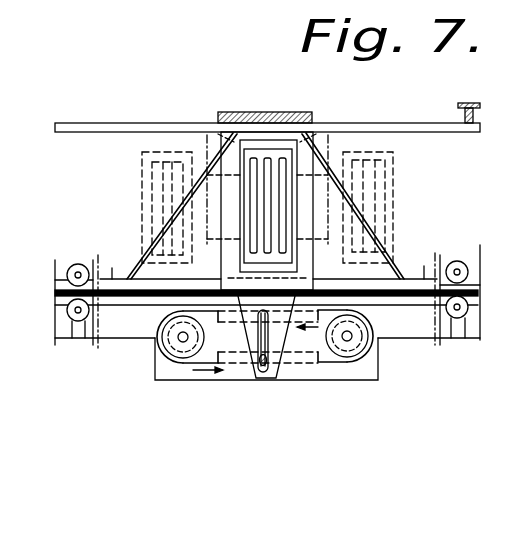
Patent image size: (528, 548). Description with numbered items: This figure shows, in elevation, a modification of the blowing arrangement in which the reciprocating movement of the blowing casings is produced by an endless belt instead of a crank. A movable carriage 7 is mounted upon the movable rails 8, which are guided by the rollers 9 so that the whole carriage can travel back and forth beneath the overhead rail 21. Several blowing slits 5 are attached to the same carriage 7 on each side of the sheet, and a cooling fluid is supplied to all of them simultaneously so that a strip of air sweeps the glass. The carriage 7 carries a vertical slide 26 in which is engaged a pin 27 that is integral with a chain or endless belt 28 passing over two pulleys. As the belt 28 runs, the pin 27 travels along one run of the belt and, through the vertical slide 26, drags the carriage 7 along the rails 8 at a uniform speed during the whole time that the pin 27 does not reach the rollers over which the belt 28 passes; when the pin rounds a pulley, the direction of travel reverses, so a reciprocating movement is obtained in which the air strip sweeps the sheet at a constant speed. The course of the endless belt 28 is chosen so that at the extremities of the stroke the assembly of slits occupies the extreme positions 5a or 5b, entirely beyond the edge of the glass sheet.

The rail 21 is at (399, 119).
The movable carriage 7 is at (226, 274).
The slit 5 is at (268, 220).
The extreme position of the slit 5a is at (165, 203).
The extreme position of the slit 5b is at (365, 202).
The movable rails 8 is at (106, 277).
The rollers 9 is at (79, 264).
The endless belt 28 is at (330, 360).
The vertical slide 26 is at (280, 340).
The pin 27 is at (262, 364).